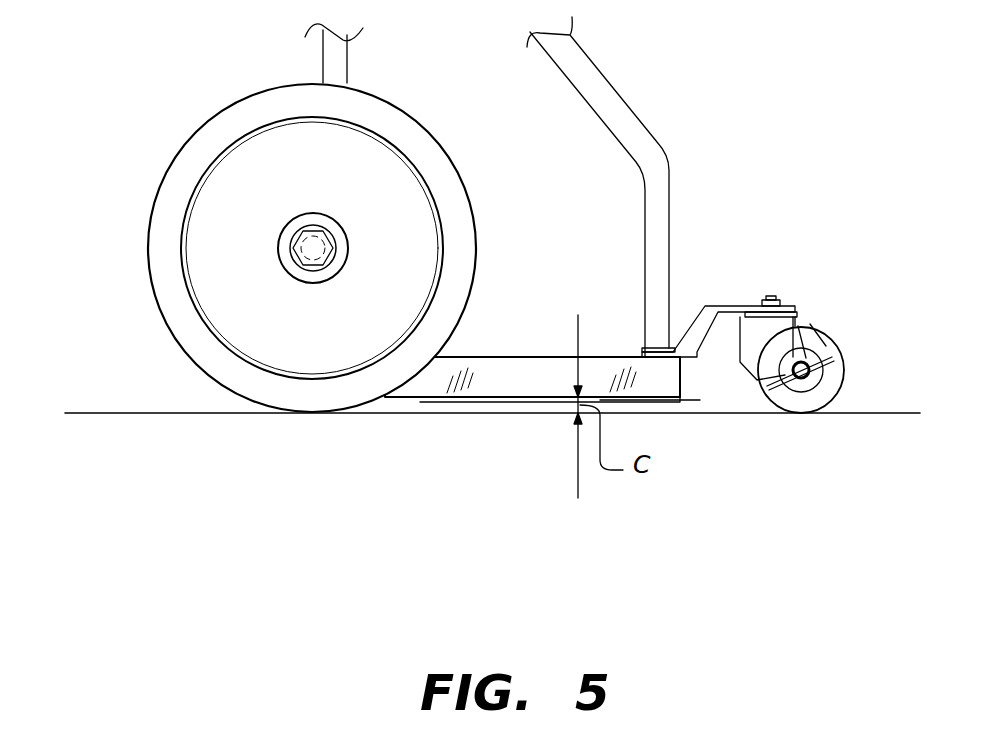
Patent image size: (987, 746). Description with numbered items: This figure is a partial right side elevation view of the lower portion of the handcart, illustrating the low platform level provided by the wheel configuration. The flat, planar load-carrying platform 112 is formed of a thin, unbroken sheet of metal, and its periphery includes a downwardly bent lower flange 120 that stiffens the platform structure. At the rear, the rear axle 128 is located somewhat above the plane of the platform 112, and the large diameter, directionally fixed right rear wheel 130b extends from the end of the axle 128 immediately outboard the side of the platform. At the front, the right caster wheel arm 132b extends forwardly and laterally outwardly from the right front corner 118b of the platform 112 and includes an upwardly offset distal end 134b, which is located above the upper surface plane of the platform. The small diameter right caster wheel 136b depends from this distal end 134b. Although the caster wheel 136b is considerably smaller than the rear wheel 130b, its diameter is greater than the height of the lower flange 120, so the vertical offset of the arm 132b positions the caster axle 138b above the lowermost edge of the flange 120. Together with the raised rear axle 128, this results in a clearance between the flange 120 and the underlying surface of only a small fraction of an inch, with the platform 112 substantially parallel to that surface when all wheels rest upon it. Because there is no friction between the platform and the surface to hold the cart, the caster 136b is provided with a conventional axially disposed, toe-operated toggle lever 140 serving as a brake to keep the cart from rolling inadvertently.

The load-carrying platform 112 is at (510, 357).
The right front corner 118b is at (690, 388).
The lower flange 120 is at (477, 400).
The rear axle 128 is at (298, 237).
The right rear wheel 130b is at (148, 236).
The right caster wheel arm 132b is at (700, 311).
The upwardly offset distal end 134b is at (792, 300).
The right caster wheel 136b is at (845, 370).
The caster axle 138b is at (807, 387).
The toe-operated toggle lever 140 is at (782, 392).